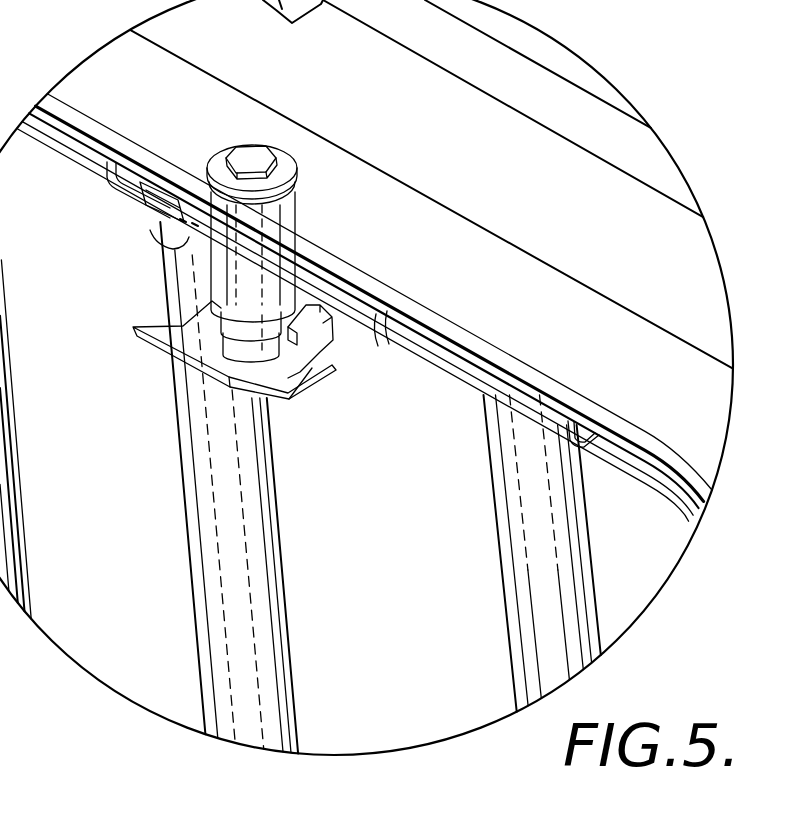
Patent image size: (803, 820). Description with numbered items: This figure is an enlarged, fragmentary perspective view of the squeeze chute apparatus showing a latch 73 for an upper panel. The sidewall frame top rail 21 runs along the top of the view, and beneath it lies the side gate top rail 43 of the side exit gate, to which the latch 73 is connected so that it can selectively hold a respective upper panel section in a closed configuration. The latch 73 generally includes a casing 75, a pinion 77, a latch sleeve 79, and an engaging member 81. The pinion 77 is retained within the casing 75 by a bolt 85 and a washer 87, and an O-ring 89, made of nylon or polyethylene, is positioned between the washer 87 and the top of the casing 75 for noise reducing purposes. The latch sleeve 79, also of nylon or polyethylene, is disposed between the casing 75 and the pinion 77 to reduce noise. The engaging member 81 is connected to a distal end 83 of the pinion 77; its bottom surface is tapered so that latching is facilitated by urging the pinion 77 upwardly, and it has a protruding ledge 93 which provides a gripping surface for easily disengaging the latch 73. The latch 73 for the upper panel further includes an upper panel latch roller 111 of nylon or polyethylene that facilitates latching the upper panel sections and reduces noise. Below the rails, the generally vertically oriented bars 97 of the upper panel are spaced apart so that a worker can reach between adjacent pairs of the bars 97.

The top rail 21 is at (230, 85).
The top rail 43 is at (92, 157).
The latch 73 is at (150, 418).
The casing 75 is at (298, 230).
The pinion 77 is at (300, 322).
The latch sleeve 79 is at (275, 312).
The engaging member 81 is at (288, 396).
The distal end 83 is at (240, 358).
The bolt 85 is at (278, 147).
The washer 87 is at (302, 176).
The O-ring 89 is at (300, 200).
The protruding ledge 93 is at (133, 327).
The vertically oriented bars 97 is at (279, 582).
The upper panel latch roller 111 is at (150, 230).